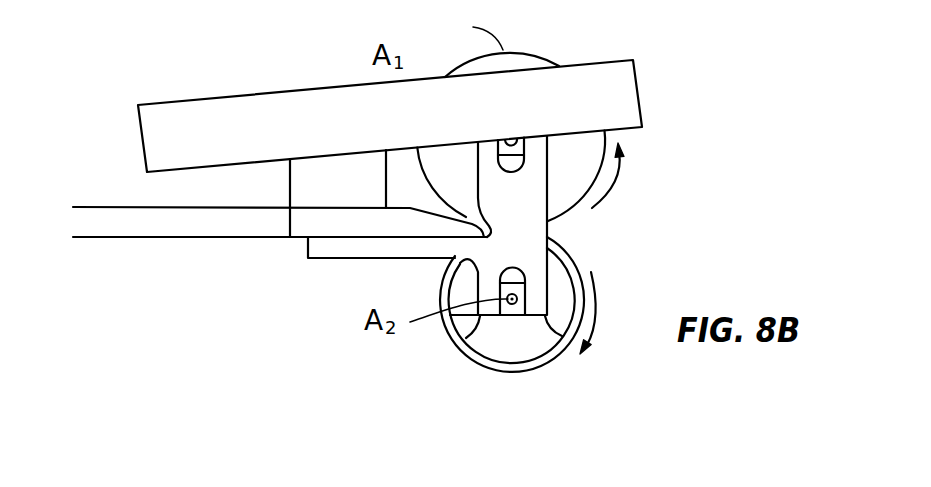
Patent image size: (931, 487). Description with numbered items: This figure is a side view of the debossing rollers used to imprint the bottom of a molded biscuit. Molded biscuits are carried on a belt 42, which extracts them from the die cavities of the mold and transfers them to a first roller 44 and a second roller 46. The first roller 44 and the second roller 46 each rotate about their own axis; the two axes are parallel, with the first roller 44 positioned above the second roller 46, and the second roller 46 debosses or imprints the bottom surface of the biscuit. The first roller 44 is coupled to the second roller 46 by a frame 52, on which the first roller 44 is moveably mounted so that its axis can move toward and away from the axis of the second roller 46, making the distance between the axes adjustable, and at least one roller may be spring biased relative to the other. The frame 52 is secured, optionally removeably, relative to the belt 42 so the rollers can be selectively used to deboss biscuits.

The belt 42 is at (187, 240).
The first roller 44 is at (511, 118).
The second roller 46 is at (512, 370).
The frame 52 is at (533, 227).